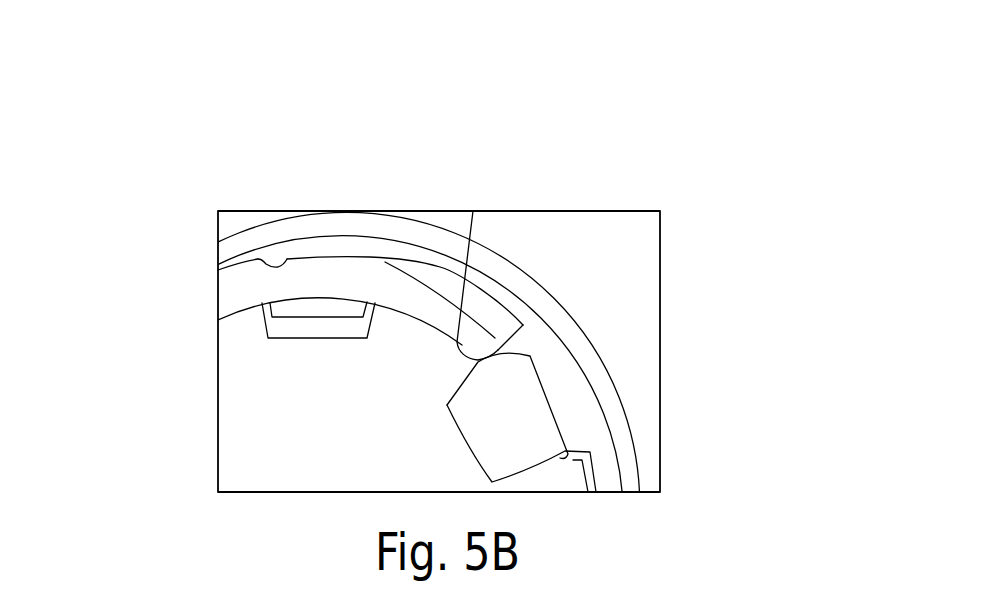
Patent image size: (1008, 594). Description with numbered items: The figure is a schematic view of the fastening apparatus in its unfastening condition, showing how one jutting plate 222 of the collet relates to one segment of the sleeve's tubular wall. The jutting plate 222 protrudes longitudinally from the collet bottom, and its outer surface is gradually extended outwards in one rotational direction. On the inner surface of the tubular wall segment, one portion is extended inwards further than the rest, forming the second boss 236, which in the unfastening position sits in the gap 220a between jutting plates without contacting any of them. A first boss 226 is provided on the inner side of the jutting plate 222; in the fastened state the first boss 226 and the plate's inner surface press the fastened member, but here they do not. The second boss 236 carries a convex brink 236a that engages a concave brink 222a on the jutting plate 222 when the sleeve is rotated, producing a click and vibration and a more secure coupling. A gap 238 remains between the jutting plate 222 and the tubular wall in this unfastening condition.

The gap 220a is at (548, 417).
The jutting plate 222 is at (237, 287).
The concave brink 222a is at (277, 256).
The first boss 226 is at (312, 328).
The second boss 236 is at (563, 382).
The convex brink 236a is at (460, 338).
The gap 238 is at (434, 268).